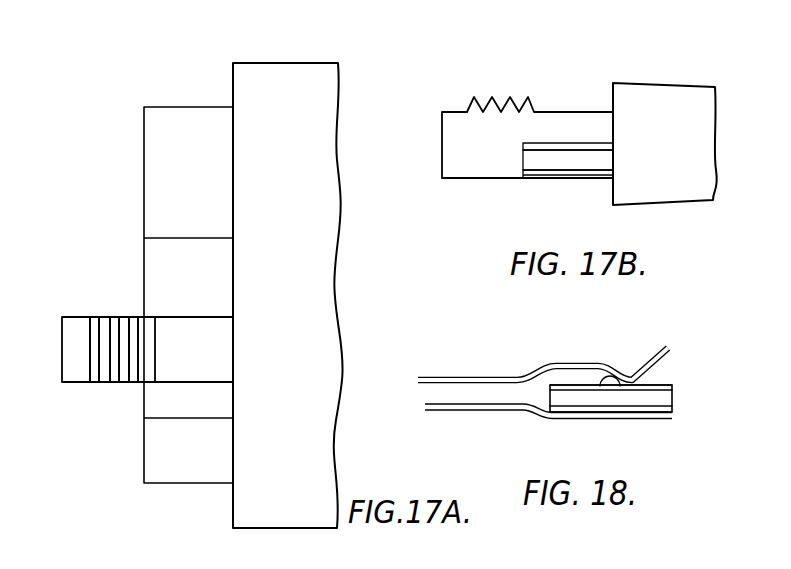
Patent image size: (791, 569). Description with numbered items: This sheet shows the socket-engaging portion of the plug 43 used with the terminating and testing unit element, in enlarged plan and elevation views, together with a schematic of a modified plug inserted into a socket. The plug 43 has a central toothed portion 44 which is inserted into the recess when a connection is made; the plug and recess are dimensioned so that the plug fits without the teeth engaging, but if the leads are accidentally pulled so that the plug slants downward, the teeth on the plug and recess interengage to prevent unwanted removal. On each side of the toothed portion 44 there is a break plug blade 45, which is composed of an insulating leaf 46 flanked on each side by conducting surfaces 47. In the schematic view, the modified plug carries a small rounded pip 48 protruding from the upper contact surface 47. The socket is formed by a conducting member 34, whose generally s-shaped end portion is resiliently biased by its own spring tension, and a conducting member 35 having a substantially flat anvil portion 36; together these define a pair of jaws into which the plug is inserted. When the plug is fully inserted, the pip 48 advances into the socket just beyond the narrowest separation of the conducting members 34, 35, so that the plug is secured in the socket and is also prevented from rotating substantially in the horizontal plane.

In FIG. 18, the conducting member 34 is at (463, 377).
In FIG. 18, the conducting member 35 is at (462, 411).
In FIG. 18, the anvil portion 36 is at (610, 415).
In FIG. 17A, the plug 43 is at (343, 253).
In FIG. 17B, the plug 43 is at (720, 160).
In FIG. 17A, the central toothed portion 44 is at (122, 316).
In FIG. 17B, the central toothed portion 44 is at (491, 93).
In FIG. 17A, the break plug blade 45 is at (178, 112).
In FIG. 17B, the insulating leaf 46 is at (547, 160).
In FIG. 17B, the conducting surfaces 47 is at (519, 178).
In FIG. 18, the conducting surfaces 47 is at (675, 412).
In FIG. 18, the rounded pip 48 is at (610, 382).